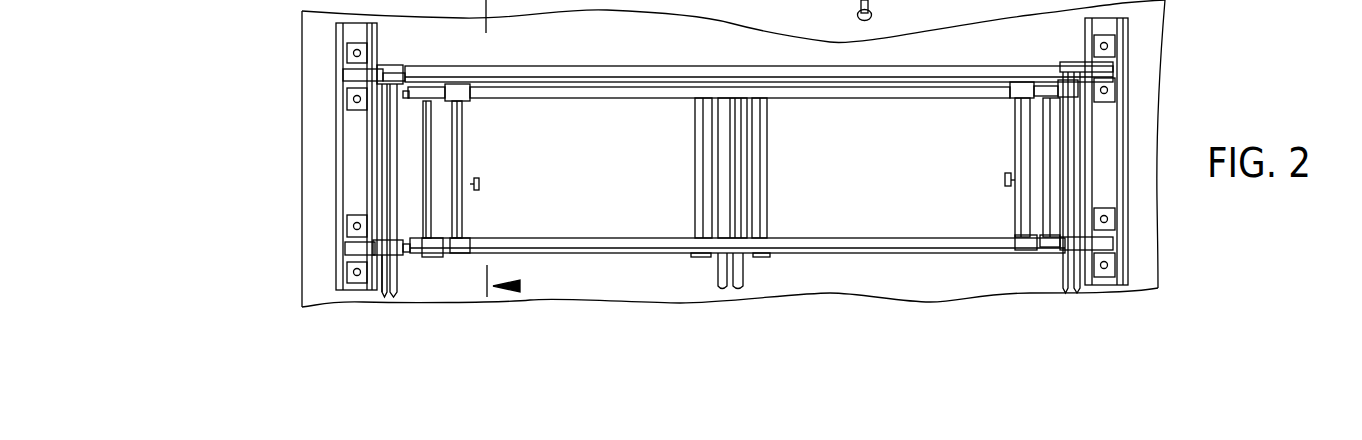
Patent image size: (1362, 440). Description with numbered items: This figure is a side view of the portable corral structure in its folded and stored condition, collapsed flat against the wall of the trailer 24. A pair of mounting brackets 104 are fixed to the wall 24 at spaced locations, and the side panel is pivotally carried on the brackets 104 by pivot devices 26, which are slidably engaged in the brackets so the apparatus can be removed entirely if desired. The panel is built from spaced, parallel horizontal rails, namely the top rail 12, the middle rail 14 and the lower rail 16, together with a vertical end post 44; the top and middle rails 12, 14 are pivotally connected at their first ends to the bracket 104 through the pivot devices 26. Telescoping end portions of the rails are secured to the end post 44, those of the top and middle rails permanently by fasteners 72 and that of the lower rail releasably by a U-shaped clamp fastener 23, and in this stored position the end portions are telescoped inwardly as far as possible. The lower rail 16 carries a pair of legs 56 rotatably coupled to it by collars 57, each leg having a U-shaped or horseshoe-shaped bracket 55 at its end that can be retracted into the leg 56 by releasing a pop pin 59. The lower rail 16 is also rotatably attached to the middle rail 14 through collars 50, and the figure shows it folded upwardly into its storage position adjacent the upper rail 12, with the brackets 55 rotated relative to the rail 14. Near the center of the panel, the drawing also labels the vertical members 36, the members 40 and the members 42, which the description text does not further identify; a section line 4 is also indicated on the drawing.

The top rail 12 is at (663, 68).
The middle rail 14 is at (856, 248).
The lower rail 16 is at (607, 97).
The releasable clamp fastener 23 is at (1063, 90).
The trailer wall 24 is at (314, 262).
The pivot device 26 is at (349, 50).
The center post 36 is at (722, 187).
The outer post 40 is at (440, 150).
The channel 42 is at (700, 143).
The vertical end post 44 is at (386, 143).
The collar 50 is at (440, 243).
The U-shaped bracket 55 is at (458, 246).
The leg 56 is at (467, 123).
The collar 57 is at (458, 86).
The pop pin 59 is at (480, 185).
The fastener 72 is at (397, 68).
The mounting bracket 104 is at (337, 162).
The section line 4- 4 is at (520, 286).